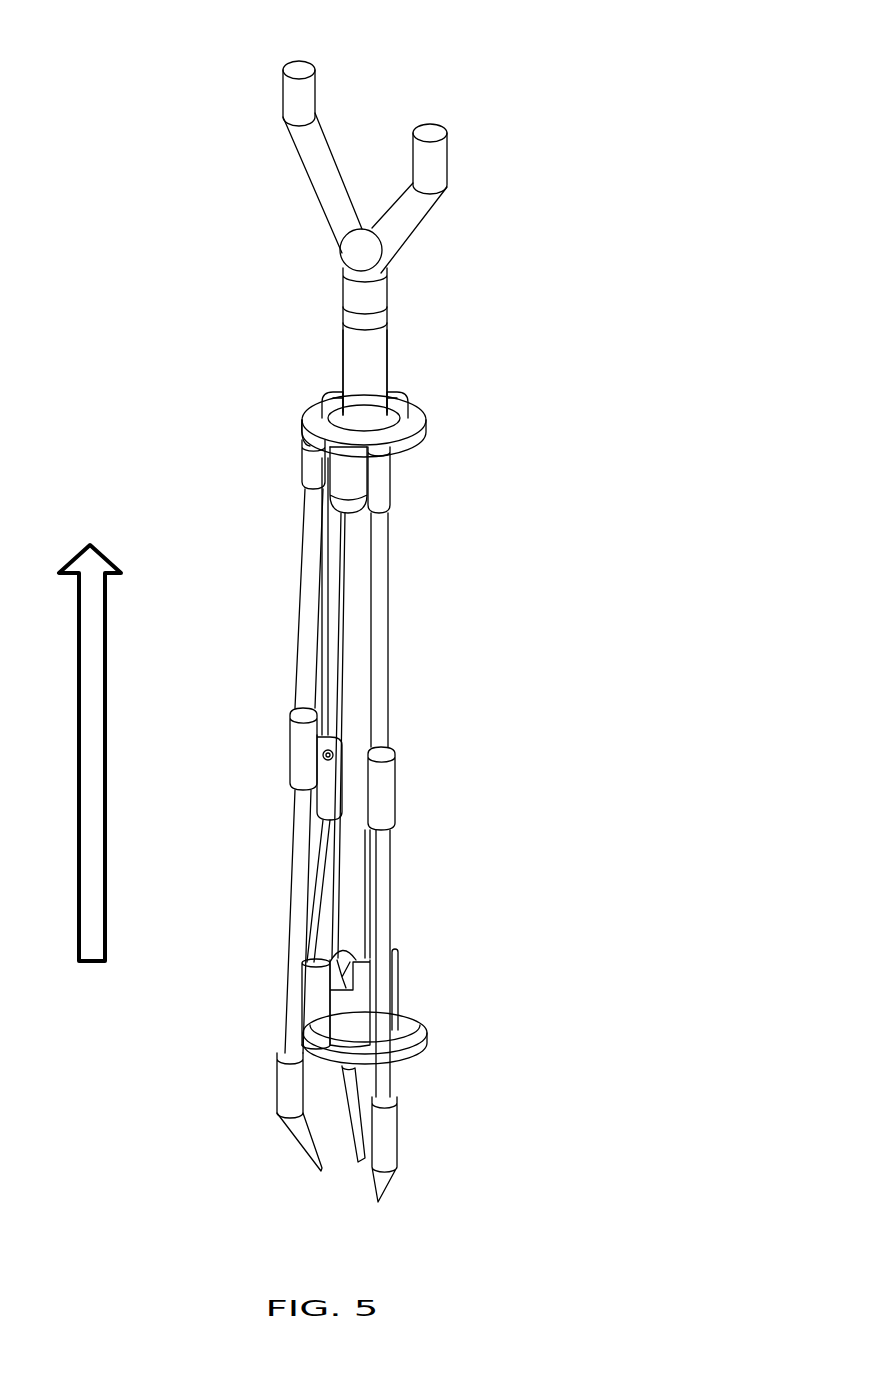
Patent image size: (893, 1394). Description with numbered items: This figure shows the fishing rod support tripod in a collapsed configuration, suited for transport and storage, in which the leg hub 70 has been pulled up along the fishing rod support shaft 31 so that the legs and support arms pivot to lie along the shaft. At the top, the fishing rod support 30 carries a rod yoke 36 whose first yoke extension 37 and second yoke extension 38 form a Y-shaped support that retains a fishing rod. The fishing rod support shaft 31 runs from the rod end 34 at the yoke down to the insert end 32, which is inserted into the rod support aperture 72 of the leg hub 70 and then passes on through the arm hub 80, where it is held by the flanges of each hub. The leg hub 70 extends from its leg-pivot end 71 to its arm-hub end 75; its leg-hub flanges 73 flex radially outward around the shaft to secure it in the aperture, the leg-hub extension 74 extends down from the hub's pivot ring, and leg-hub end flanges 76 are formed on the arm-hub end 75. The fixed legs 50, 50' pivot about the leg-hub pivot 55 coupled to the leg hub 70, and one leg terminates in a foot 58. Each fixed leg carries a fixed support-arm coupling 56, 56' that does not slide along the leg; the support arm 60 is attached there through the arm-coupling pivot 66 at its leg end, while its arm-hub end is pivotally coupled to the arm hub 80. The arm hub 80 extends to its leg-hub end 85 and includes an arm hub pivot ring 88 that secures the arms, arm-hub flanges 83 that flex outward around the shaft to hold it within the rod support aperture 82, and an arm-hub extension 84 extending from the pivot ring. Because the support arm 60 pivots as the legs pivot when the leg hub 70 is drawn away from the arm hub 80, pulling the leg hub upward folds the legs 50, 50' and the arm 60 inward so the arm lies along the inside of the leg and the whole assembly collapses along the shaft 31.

The fishing rod support 30 is at (362, 340).
The fishing rod support shaft 31 is at (353, 372).
The insert end 32 is at (355, 1178).
The rod end 34 is at (363, 290).
The rod yoke 36 is at (357, 257).
The first yoke extension 37 is at (300, 77).
The second yoke extension 38 is at (433, 150).
The fixed leg 50 is at (242, 771).
The fixed leg 50' is at (454, 857).
The leg-hub pivot 55 is at (414, 447).
The fixed support-arm coupling 56 is at (233, 752).
The fixed support-arm coupling 56' is at (451, 788).
The foot 58 is at (293, 1133).
The support arm 60 is at (323, 882).
The arm-coupling pivot 66 is at (325, 745).
The leg hub 70 is at (418, 413).
The leg-pivot end 71 is at (396, 410).
The rod support aperture 72 is at (346, 408).
The leg-hub flanges 73 is at (308, 440).
The leg-hub extension 74 is at (357, 470).
The arm-hub end 75 is at (343, 533).
The leg-hub end flanges 76 is at (380, 535).
The arm hub 80 is at (420, 1030).
The rod support aperture 82 is at (345, 950).
The arm-hub flanges 83 is at (355, 963).
The arm-hub extension 84 is at (345, 1000).
The leg-hub end 85 is at (395, 965).
The arm hub pivot ring 88 is at (330, 1035).